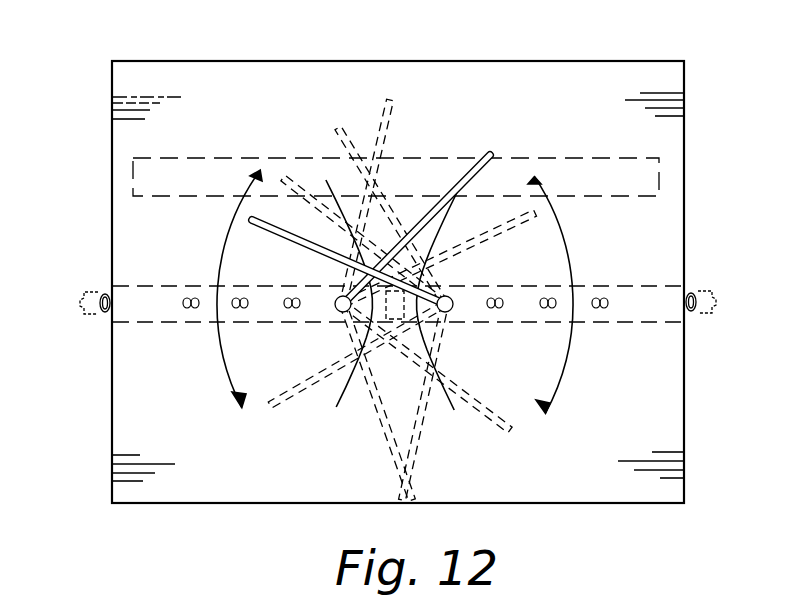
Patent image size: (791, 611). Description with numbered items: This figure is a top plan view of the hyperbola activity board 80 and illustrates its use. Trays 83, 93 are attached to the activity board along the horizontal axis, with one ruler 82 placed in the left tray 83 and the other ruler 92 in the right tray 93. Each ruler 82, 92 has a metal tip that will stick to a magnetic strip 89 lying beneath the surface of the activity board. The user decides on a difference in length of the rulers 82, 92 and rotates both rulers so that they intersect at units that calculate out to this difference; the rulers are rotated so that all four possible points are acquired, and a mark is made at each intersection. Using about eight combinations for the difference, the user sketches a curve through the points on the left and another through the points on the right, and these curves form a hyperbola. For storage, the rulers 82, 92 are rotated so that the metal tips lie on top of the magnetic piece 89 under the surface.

The hyperbola activity board 80 is at (583, 48).
The ruler 82 is at (467, 168).
The tray 83 is at (100, 330).
The magnetic strip 89 is at (660, 166).
The ruler 92 is at (308, 246).
The tray 93 is at (692, 286).